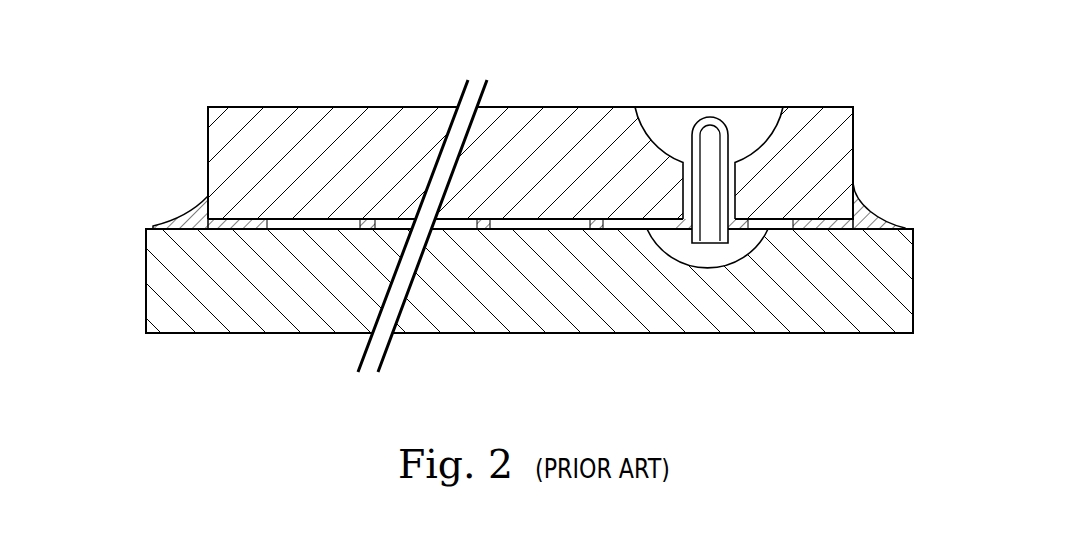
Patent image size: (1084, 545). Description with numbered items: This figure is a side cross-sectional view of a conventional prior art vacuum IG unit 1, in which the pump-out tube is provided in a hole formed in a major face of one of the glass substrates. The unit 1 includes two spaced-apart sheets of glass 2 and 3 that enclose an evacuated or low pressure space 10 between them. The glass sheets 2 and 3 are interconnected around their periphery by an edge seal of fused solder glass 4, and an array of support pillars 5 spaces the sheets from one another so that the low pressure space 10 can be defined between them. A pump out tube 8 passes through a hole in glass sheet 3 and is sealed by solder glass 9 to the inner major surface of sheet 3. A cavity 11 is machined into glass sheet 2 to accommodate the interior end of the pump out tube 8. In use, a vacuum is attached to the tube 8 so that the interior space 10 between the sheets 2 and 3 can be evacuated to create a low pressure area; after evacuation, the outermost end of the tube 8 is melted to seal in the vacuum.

The vacuum IG unit 1 is at (146, 118).
The glass sheet 2 is at (220, 315).
The glass sheet 3 is at (308, 115).
The edge seal of fused solder glass 4 is at (193, 207).
The support pillars 5 is at (358, 222).
The pump out tube 8 is at (727, 122).
The solder glass 9 is at (735, 227).
The low pressure space 10 is at (563, 223).
The cavity 11 is at (687, 252).